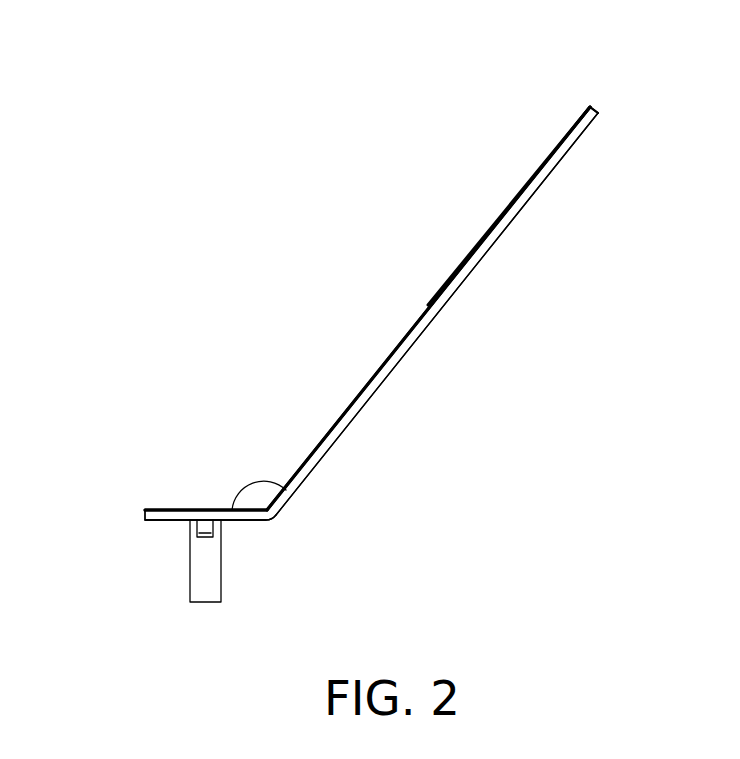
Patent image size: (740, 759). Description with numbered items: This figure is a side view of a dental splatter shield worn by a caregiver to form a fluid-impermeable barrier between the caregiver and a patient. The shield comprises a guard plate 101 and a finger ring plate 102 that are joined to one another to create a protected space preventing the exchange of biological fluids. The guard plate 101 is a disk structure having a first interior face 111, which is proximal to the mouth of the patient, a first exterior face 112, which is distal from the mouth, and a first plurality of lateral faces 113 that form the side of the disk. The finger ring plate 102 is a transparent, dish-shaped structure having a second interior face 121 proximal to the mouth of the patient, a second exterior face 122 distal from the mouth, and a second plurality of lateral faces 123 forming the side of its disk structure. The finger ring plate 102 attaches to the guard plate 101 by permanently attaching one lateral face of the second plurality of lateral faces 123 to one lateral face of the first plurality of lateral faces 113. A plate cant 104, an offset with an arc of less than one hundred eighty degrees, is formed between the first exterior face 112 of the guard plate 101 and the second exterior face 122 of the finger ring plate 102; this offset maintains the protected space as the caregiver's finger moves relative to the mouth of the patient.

The guard plate 101 is at (598, 113).
The finger ring plate 102 is at (143, 510).
The plate cant 104 is at (255, 478).
The first interior face 111 is at (430, 317).
The first exterior face 112 is at (428, 305).
The first plurality of lateral faces 113 is at (500, 223).
The second interior face 121 is at (167, 520).
The second exterior face 122 is at (207, 510).
The second plurality of lateral faces 123 is at (243, 522).